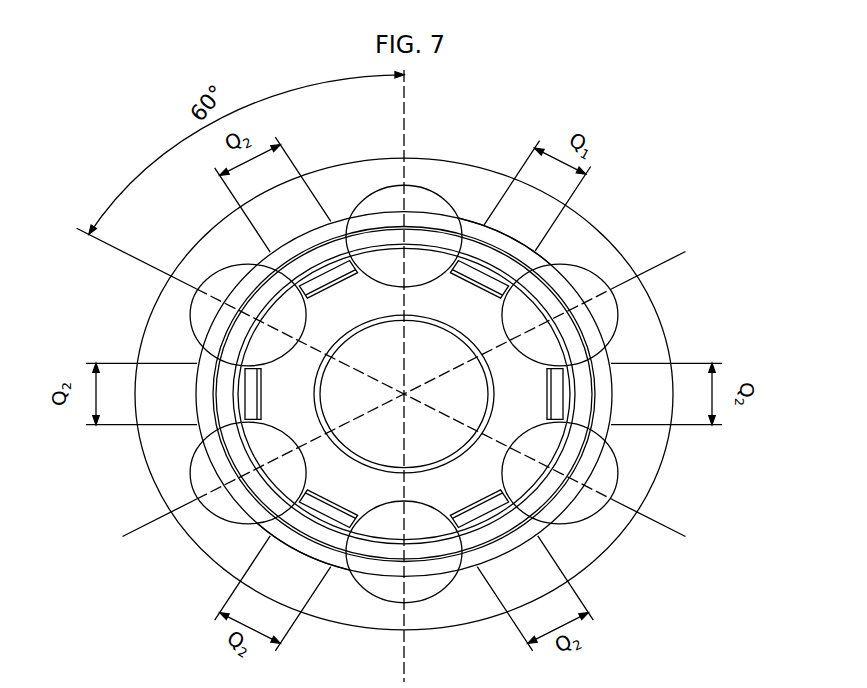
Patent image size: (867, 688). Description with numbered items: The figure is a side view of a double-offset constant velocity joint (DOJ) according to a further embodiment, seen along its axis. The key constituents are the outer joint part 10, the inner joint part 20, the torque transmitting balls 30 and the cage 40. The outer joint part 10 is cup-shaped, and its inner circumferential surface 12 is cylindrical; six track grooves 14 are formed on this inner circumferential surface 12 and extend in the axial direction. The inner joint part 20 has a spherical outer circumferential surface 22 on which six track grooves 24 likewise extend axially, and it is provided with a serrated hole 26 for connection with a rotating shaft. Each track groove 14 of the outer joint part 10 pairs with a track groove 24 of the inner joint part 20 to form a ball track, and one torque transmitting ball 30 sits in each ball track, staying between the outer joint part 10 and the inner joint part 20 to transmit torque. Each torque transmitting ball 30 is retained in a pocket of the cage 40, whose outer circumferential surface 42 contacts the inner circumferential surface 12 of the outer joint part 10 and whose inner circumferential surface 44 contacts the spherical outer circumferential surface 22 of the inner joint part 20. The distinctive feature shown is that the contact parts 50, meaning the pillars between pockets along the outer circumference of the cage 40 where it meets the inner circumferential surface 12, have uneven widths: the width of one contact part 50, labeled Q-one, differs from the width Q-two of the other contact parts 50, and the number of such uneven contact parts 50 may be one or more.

The outer joint part 10 is at (469, 171).
The inner circumferential surface 12 is at (212, 409).
The track groove 14 is at (212, 276).
The inner joint part 20 is at (502, 396).
The spherical outer circumferential surface 22 is at (328, 278).
The track groove 24 is at (423, 280).
The serrated hole 26 is at (319, 392).
The torque transmitting ball 30 is at (226, 500).
The cage 40 is at (578, 452).
The outer circumferential surface 42 is at (513, 552).
The inner circumferential surface 44 is at (474, 499).
The contact part 50 is at (542, 251).